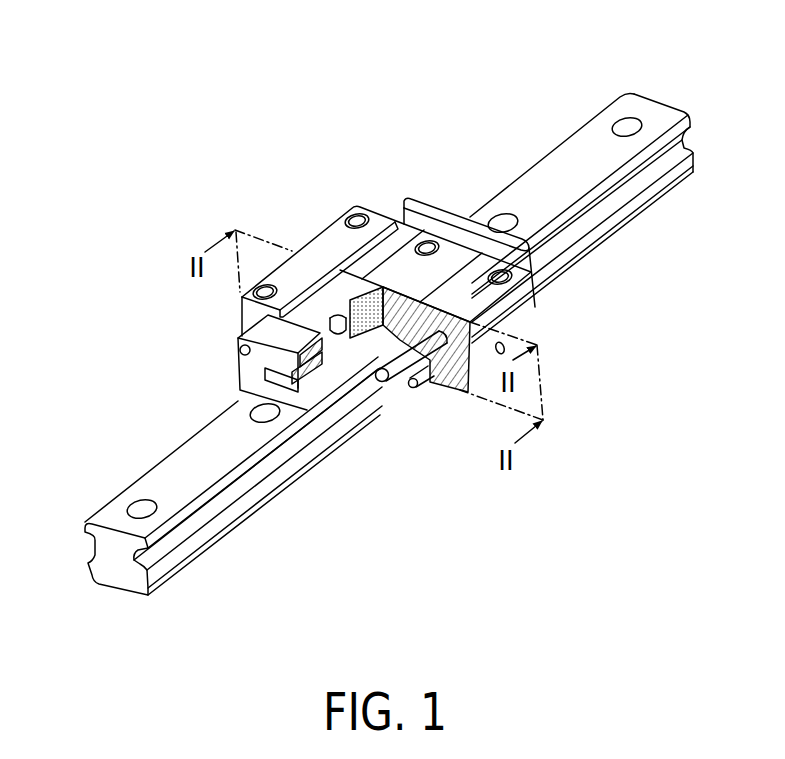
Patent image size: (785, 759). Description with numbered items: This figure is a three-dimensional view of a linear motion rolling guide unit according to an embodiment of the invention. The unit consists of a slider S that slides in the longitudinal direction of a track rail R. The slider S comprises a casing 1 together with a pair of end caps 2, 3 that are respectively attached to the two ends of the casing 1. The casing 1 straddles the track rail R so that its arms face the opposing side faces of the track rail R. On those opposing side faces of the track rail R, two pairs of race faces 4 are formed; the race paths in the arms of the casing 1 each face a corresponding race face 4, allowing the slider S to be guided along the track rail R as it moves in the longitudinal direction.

The slider S is at (311, 172).
The track rail R is at (662, 110).
The casing 1 is at (318, 246).
The end cap 2 is at (412, 207).
The end cap 3 is at (255, 333).
The race faces 4 is at (92, 549).